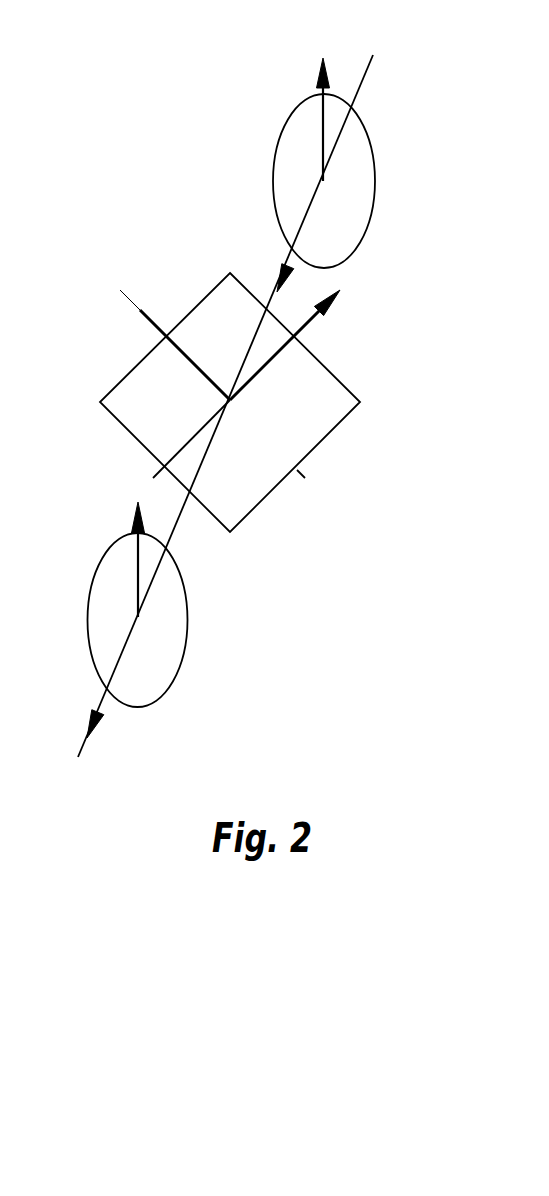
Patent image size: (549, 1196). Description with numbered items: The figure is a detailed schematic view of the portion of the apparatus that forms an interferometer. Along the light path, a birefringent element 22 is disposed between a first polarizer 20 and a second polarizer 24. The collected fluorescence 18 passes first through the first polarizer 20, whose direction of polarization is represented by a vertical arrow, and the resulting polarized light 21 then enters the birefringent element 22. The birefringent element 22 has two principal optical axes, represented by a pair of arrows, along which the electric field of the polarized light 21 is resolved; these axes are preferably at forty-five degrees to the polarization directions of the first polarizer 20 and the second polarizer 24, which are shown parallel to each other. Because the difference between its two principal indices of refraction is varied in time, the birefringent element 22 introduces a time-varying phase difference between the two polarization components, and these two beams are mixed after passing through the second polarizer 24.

The collected fluorescence 18 is at (375, 63).
The first polarizer 20 is at (375, 197).
The polarized light 21 is at (282, 265).
The birefringent element 22 is at (347, 385).
The second polarizer 24 is at (180, 667).